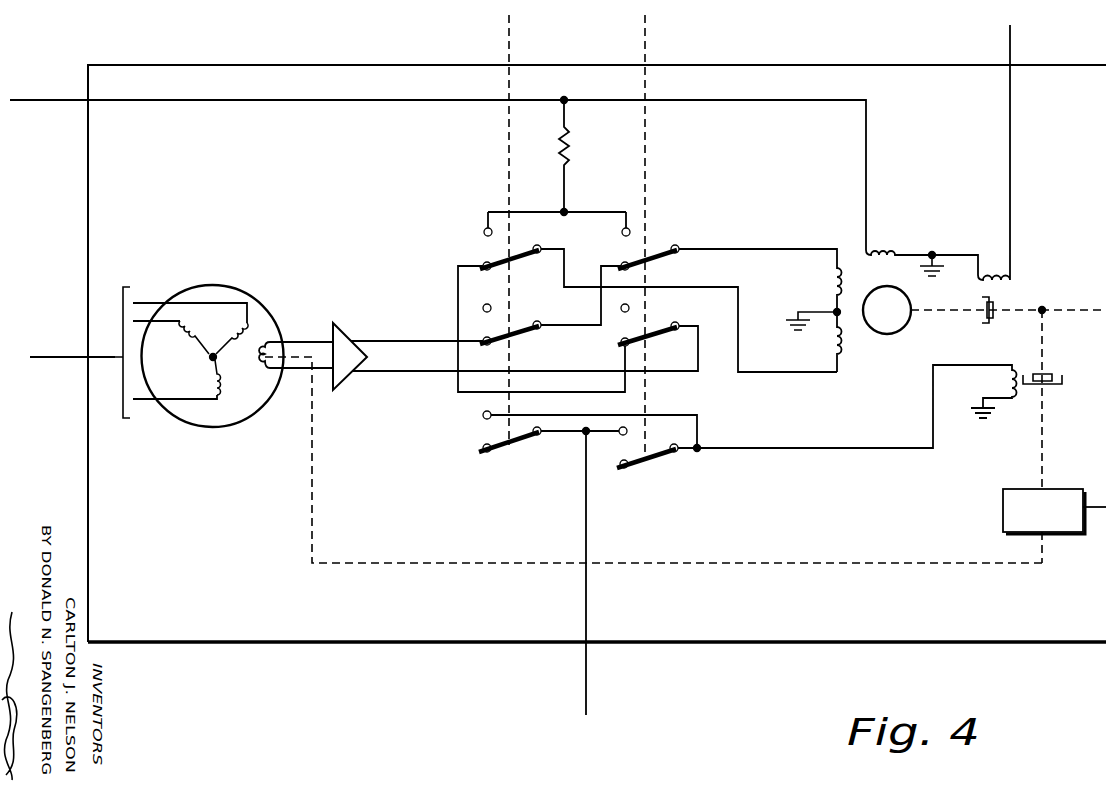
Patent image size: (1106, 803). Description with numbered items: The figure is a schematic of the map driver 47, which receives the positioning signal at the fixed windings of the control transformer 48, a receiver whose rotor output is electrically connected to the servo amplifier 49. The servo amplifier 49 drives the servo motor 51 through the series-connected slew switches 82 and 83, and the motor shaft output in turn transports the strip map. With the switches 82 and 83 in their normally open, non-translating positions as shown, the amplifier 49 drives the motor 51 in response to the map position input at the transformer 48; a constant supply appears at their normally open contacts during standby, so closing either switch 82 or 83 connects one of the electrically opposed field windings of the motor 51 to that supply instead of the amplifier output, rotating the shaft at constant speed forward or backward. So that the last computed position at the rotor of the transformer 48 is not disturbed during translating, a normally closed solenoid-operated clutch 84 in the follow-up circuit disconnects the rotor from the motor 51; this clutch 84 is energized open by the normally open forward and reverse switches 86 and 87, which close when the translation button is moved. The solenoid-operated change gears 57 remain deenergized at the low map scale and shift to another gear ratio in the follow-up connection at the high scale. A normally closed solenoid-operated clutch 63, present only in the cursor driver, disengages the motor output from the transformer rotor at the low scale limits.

The map driver 47 is at (166, 65).
The control transformer (receiver) 48 is at (246, 290).
The servo amplifier 49 is at (352, 323).
The servo motor 51 is at (874, 343).
The solenoid-operated change gears 57 is at (1054, 511).
The solenoid-operated clutch 63 is at (991, 260).
The forward translation switch 82 is at (517, 256).
The backward translation switch 83 is at (667, 322).
The solenoid-operated clutch 84 is at (1027, 398).
The forward switch 86 is at (513, 440).
The reverse switch 87 is at (660, 455).